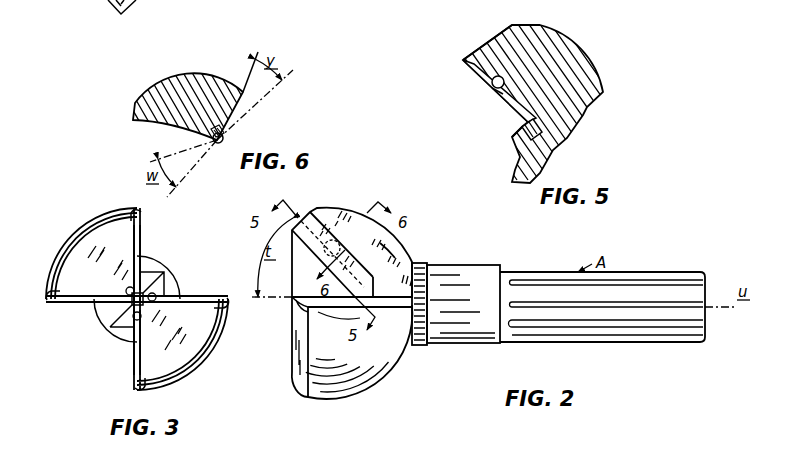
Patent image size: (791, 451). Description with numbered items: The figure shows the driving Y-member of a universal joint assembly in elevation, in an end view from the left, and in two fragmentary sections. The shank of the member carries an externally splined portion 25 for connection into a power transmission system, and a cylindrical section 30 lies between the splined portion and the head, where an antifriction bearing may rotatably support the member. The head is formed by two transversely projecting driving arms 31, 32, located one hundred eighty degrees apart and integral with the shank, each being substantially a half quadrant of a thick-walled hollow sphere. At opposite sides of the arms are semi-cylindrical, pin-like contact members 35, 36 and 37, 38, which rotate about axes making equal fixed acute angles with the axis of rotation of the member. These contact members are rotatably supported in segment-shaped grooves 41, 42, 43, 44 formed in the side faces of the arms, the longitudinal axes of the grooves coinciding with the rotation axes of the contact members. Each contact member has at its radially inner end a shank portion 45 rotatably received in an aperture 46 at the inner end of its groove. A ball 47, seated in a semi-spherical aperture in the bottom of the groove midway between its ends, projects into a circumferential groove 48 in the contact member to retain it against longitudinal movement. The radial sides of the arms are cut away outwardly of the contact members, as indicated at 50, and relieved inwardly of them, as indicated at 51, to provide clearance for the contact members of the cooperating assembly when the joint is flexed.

In FIG. 2, the externally splined portion 25 is at (660, 288).
In FIG. 2, the cylindrical section 30 is at (459, 277).
In FIG. 3, the driving arm 31 is at (177, 372).
In FIG. 2, the driving arm 31 is at (355, 382).
In FIG. 6, the driving arm 32 is at (163, 93).
In FIG. 5, the driving arm 32 is at (573, 66).
In FIG. 3, the driving arm 32 is at (86, 226).
In FIG. 5, the semi-cylindrical contact member 35 is at (475, 72).
In FIG. 3, the semi-cylindrical contact member 35 is at (194, 297).
In FIG. 2, the semi-cylindrical contact member 35 is at (298, 308).
In FIG. 3, the semi-cylindrical contact member 36 is at (136, 379).
In FIG. 3, the semi-cylindrical contact member 37 is at (141, 237).
In FIG. 2, the semi-cylindrical contact member 37 is at (320, 216).
In FIG. 3, the semi-cylindrical contact member 38 is at (84, 300).
In FIG. 3, the groove 41 is at (226, 298).
In FIG. 3, the groove 42 is at (137, 388).
In FIG. 5, the groove 43 is at (466, 57).
In FIG. 3, the groove 43 is at (147, 213).
In FIG. 3, the groove 44 is at (52, 295).
In FIG. 5, the shank portion 45 is at (517, 132).
In FIG. 5, the aperture 46 is at (542, 141).
In FIG. 6, the ball 47 is at (216, 124).
In FIG. 5, the ball 47 is at (491, 86).
In FIG. 5, the circumferential groove 48 is at (500, 92).
In FIG. 6, the cut-away portion 50 is at (244, 102).
In FIG. 2, the cut-away portion 50 is at (389, 243).
In FIG. 6, the relieved portion 51 is at (220, 145).